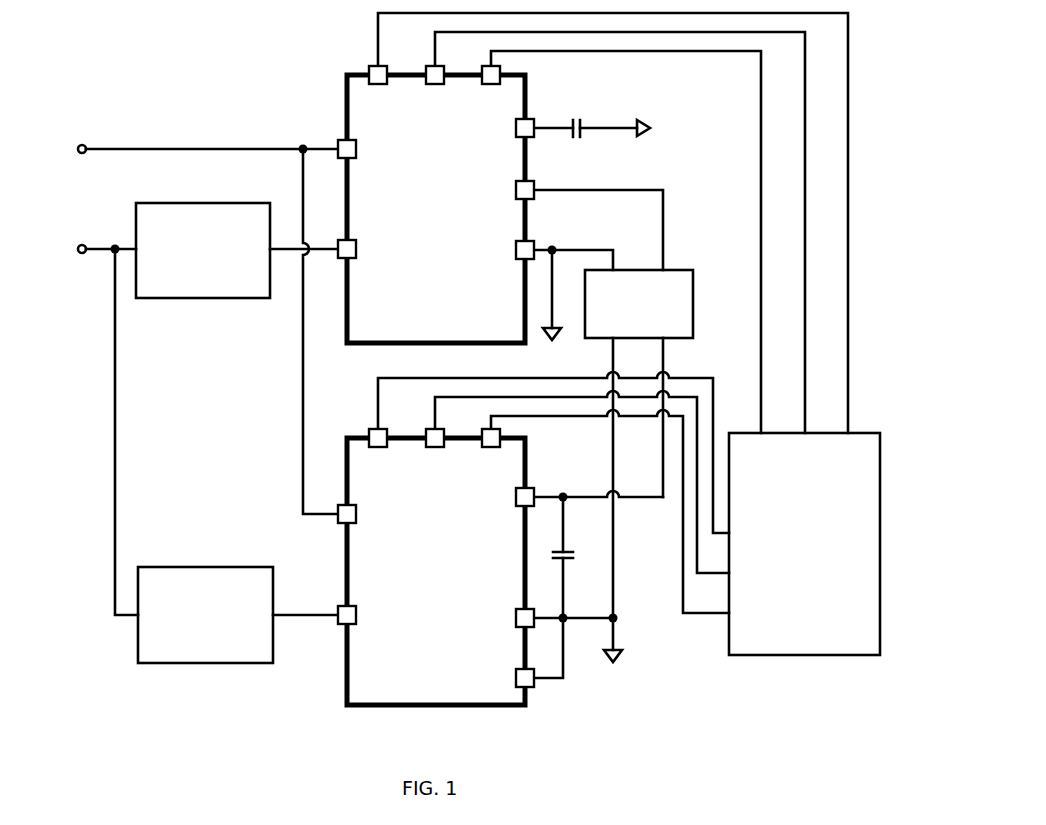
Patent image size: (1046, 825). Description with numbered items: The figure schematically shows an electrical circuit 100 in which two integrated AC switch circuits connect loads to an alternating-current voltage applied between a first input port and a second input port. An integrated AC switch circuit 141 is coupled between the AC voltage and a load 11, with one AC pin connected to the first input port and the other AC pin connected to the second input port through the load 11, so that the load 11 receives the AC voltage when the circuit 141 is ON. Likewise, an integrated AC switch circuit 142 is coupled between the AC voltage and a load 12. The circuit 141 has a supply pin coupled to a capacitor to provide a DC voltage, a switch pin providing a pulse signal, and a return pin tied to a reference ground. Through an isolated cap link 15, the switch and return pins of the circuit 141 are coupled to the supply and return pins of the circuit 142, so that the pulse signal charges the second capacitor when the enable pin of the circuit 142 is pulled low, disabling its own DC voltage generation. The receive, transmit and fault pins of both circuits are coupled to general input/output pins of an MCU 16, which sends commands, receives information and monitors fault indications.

The electrical circuit 100 is at (180, 63).
The load 11 is at (242, 261).
The load 12 is at (244, 626).
The integrated AC switch circuit 141 is at (456, 209).
The integrated AC switch circuit 142 is at (456, 579).
The isolated cap link 15 is at (666, 270).
The MCU 16 is at (849, 581).